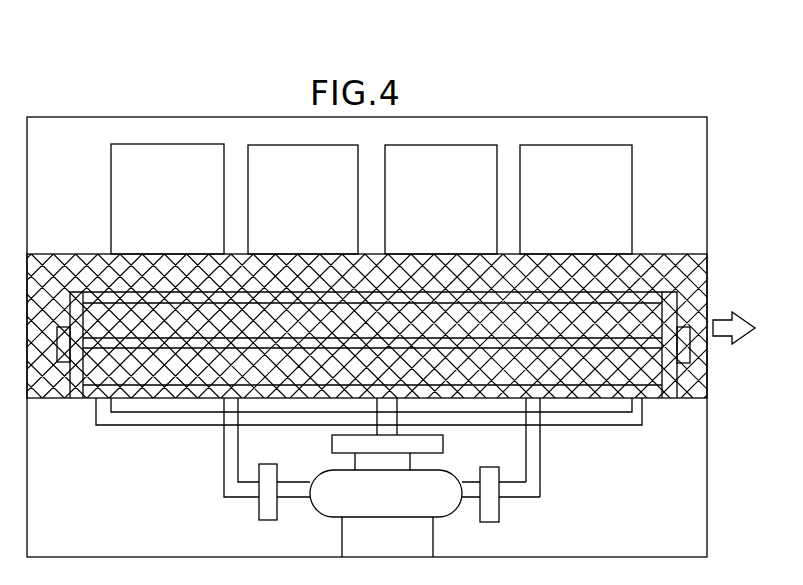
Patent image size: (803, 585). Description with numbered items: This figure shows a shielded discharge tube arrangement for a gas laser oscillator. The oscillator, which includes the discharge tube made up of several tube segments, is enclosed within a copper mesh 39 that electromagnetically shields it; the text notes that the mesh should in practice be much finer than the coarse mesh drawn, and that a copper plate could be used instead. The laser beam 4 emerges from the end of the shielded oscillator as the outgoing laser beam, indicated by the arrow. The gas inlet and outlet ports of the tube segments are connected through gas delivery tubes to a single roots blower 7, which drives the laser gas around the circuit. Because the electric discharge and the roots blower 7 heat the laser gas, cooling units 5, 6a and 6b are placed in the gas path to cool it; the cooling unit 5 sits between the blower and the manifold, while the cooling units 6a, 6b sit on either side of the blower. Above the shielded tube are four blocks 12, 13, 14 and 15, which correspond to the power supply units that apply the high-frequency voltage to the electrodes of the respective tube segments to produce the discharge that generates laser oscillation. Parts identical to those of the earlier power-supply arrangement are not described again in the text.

The outgoing laser beam 4 is at (736, 341).
The cooling unit 5 is at (443, 445).
The cooling unit 6a is at (268, 520).
The cooling unit 6b is at (492, 522).
The roots blower 7 is at (397, 508).
The supply unit 12 is at (183, 216).
The supply unit 13 is at (321, 216).
The supply unit 14 is at (451, 216).
The supply unit 15 is at (585, 218).
The copper mesh 39 is at (664, 254).